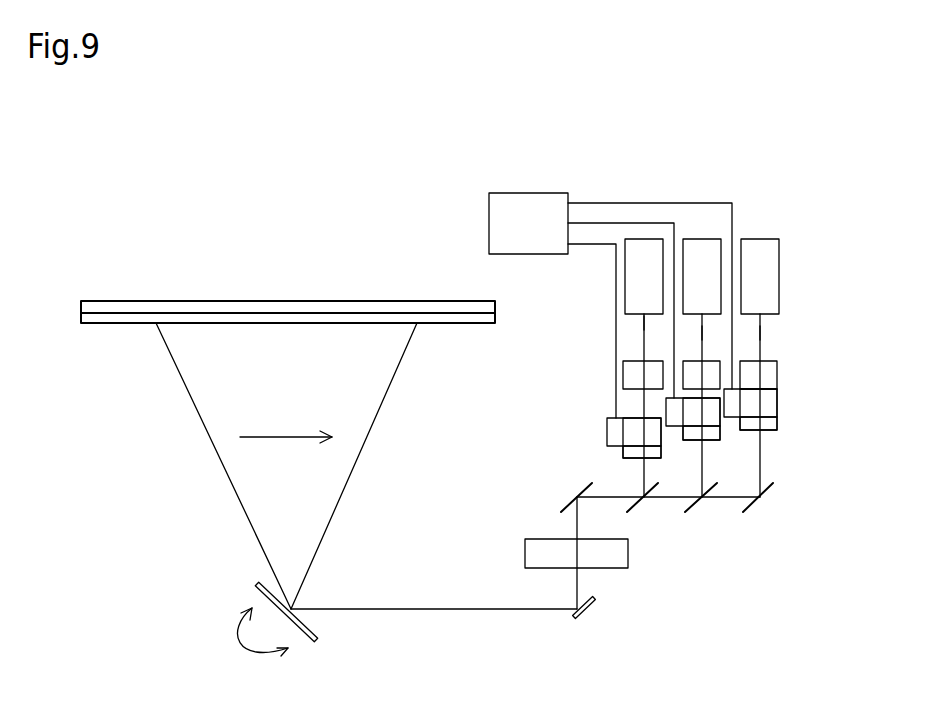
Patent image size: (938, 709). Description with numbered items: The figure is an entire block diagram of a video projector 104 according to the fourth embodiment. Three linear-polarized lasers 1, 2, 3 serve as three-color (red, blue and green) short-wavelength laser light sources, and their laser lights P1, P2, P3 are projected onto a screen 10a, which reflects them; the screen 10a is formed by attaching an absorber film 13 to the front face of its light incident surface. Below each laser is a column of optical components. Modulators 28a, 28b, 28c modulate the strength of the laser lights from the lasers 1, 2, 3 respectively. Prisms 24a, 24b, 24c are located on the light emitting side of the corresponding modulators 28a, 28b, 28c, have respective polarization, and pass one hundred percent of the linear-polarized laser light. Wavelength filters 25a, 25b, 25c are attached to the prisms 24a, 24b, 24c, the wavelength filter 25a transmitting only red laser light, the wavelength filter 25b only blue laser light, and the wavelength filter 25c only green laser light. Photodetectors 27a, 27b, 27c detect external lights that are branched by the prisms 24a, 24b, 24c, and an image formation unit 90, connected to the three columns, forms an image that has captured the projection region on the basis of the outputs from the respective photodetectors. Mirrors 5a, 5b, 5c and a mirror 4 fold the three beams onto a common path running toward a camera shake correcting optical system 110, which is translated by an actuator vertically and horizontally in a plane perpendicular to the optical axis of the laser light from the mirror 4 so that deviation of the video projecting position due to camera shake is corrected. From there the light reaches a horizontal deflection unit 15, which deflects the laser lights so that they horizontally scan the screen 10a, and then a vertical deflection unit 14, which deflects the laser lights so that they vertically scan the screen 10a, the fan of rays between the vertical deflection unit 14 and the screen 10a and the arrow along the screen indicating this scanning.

The video projector 104 is at (166, 237).
The screen 10a is at (355, 301).
The absorber film 13 is at (107, 323).
The vertical deflection unit 14 is at (255, 592).
The horizontal deflection unit 15 is at (596, 616).
The camera shake correcting optical system 110 is at (525, 553).
The mirror 4 is at (573, 497).
The mirror 5a is at (640, 505).
The mirror 5b is at (703, 505).
The mirror 5c is at (757, 505).
The image formation unit 90 is at (489, 210).
The linear-polarized laser 1 is at (652, 238).
The linear-polarized laser 2 is at (710, 238).
The linear-polarized laser 3 is at (767, 238).
The laser light P1 is at (644, 322).
The laser light P2 is at (702, 333).
The laser light P3 is at (760, 333).
The prism 24a is at (607, 446).
The prism 24b is at (720, 430).
The prism 24c is at (777, 389).
The wavelength filter 25a is at (655, 462).
The wavelength filter 25b is at (712, 440).
The wavelength filter 25c is at (777, 424).
The photodetector 27a is at (607, 432).
The photodetector 27b is at (666, 410).
The photodetector 27c is at (777, 402).
The modulator 28a is at (623, 375).
The modulator 28b is at (721, 362).
The modulator 28c is at (777, 361).